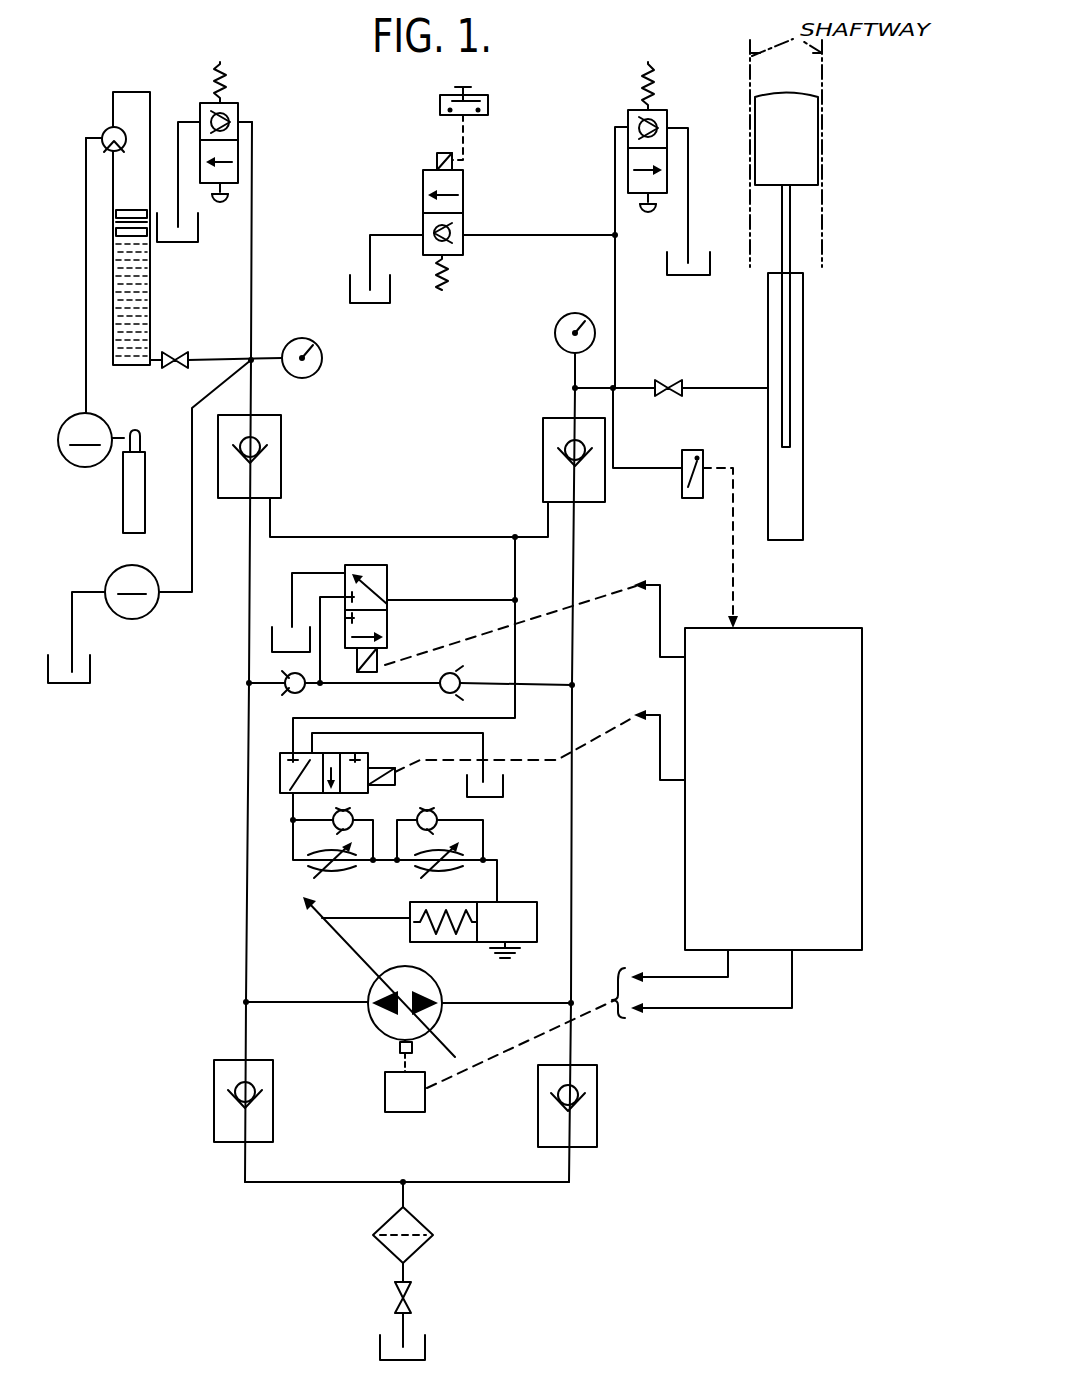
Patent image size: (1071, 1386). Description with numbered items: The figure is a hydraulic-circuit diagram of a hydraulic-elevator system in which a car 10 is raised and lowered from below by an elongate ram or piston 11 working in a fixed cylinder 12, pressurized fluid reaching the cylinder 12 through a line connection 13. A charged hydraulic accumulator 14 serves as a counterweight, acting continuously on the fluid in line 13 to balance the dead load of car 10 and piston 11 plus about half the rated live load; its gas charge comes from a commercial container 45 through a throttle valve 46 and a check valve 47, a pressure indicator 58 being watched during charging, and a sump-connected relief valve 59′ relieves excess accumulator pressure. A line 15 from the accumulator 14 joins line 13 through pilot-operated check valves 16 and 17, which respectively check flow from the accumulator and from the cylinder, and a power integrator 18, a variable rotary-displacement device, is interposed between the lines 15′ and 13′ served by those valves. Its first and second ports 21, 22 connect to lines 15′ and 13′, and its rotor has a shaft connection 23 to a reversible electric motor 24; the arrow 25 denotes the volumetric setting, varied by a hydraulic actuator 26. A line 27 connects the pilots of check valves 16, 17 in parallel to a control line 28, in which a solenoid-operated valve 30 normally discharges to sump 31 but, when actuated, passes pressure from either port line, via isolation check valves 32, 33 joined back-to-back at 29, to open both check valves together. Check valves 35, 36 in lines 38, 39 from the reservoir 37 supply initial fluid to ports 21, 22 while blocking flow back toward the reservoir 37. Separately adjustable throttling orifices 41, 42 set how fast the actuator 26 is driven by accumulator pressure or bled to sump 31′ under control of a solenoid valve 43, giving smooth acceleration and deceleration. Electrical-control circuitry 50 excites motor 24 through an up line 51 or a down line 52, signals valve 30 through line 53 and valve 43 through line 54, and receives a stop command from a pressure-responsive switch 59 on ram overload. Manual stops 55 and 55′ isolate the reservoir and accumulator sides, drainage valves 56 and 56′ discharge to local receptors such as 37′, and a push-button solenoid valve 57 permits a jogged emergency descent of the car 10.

The car 10 is at (817, 136).
The elongate ram (piston) 11 is at (791, 224).
The fixed cylinder 12 is at (804, 354).
The line connection 13 is at (731, 387).
The integrator port line 13′ is at (573, 848).
The charged hydraulic accumulator 14 is at (150, 296).
The accumulator line 15 is at (227, 358).
The integrator port line 15′ is at (247, 780).
The pilot-operated check valve 16 is at (282, 456).
The pilot-operated check valve 17 is at (541, 453).
The power integrator 18 is at (440, 983).
The first flow-connection port 21 is at (351, 1009).
The second flow-connection port 22 is at (456, 1009).
The shaft connection 23 is at (398, 1065).
The reversible electric motor 24 is at (385, 1100).
The volumetric-control setting 25 is at (338, 950).
The hydraulic actuator 26 is at (500, 902).
The pilot connection line 27 is at (442, 540).
The control line 28 is at (480, 599).
The back-to-back connection 29 is at (320, 688).
The solenoid-operated valve 30 is at (389, 620).
The sump 31 is at (272, 633).
The sump 31′ is at (504, 789).
The isolation check valve 32 is at (275, 697).
The isolation check valve 33 is at (461, 673).
The check valve 35 is at (212, 1093).
The check valve 36 is at (599, 1106).
The reservoir (sump) 37 is at (427, 1346).
The local sump receptor 37′ is at (198, 226).
The reservoir line 38 is at (259, 1186).
The reservoir line 39 is at (482, 1186).
The adjustable throttling orifice 41 is at (489, 847).
The adjustable throttling orifice 42 is at (289, 840).
The solenoid valve 43 is at (376, 760).
The commercial container 45 is at (121, 502).
The throttle valve 46 is at (63, 464).
The check valve 47 is at (103, 130).
The electrical-control circuitry 50 is at (863, 688).
The UP control line 51 is at (745, 969).
The down control line 52 is at (795, 973).
The control line 53 is at (657, 619).
The control line 54 is at (658, 746).
The manual shut-off valve 55 is at (412, 1293).
The manual shut-off valve 55′ is at (170, 366).
The manual drainage valve 56 is at (240, 109).
The manual drainage valve 56′ is at (627, 119).
The solenoid valve 57 is at (421, 213).
The pressure indicator 58 is at (316, 373).
The pressure-responsive switch 59 is at (706, 456).
The relief valve 59′ is at (113, 580).